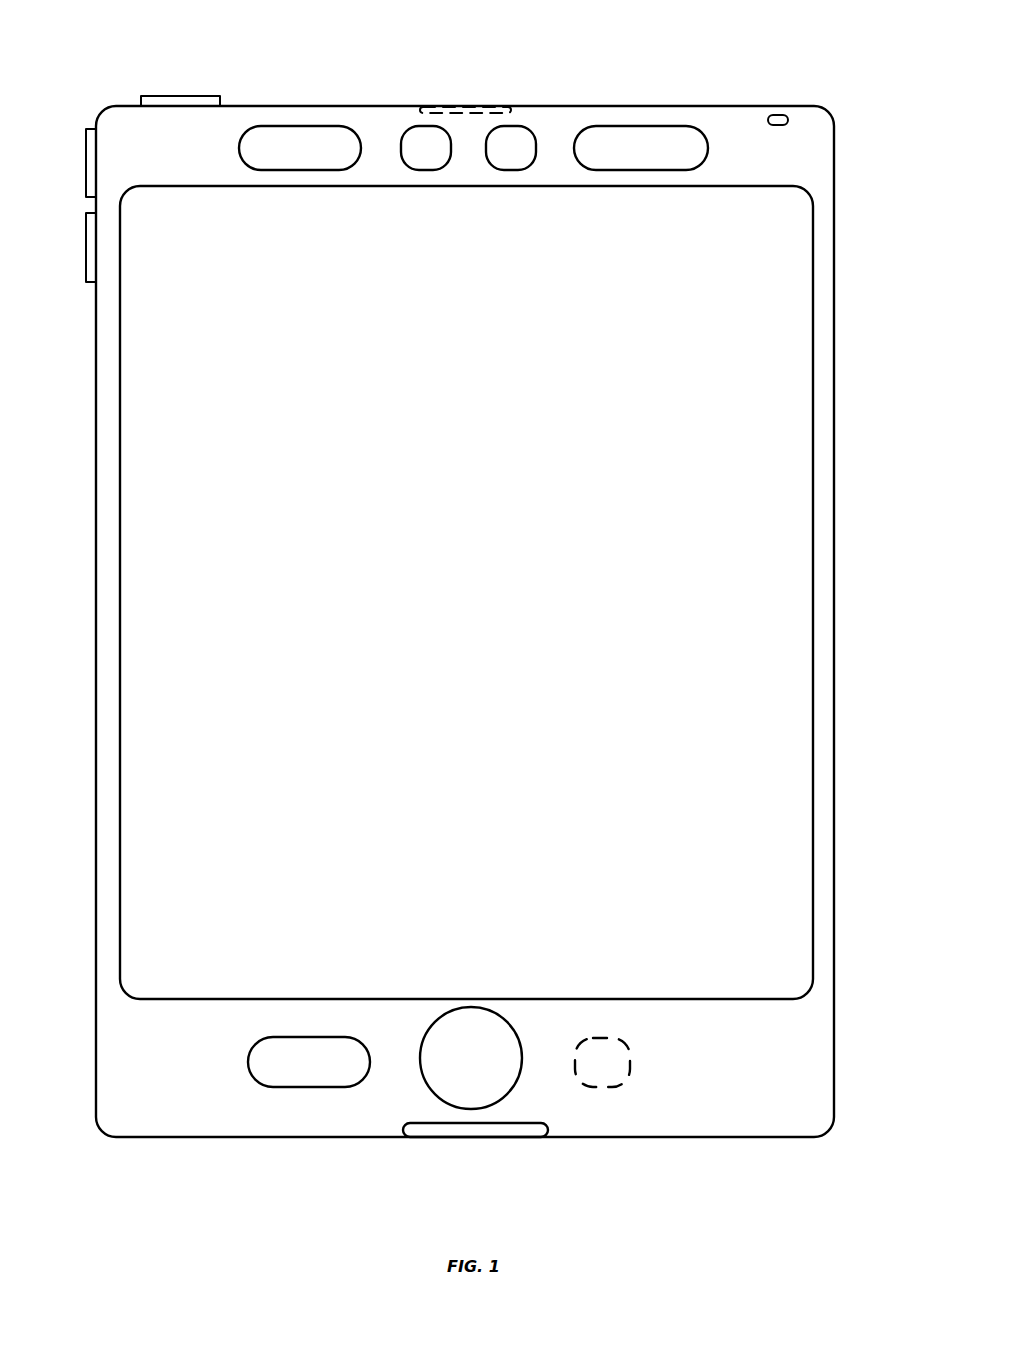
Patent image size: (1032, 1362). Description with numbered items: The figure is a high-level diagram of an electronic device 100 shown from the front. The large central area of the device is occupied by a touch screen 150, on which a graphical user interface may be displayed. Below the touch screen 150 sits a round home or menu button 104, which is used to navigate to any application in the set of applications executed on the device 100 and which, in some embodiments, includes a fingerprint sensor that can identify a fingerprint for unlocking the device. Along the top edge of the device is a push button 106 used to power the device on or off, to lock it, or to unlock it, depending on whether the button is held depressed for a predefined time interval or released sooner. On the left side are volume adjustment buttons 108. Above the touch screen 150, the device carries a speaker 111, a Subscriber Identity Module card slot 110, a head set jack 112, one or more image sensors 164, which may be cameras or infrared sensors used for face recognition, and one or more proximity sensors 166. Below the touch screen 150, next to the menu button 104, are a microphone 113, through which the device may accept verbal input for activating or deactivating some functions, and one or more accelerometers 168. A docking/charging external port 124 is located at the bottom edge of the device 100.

The electronic device 100 is at (870, 107).
The menu button 104 is at (471, 1058).
The push button 106 is at (178, 96).
The volume adjustment buttons 108 is at (86, 160).
The Subscriber Identity Module (SIM) card slot 110 is at (464, 108).
The speaker 111 is at (300, 148).
The head set jack 112 is at (776, 115).
The microphone 113 is at (309, 1062).
The docking/charging external port 124 is at (478, 1137).
The touch screen 150 is at (813, 486).
The image sensors 164 is at (468, 148).
The proximity sensors 166 is at (641, 148).
The accelerometers 168 is at (602, 1062).